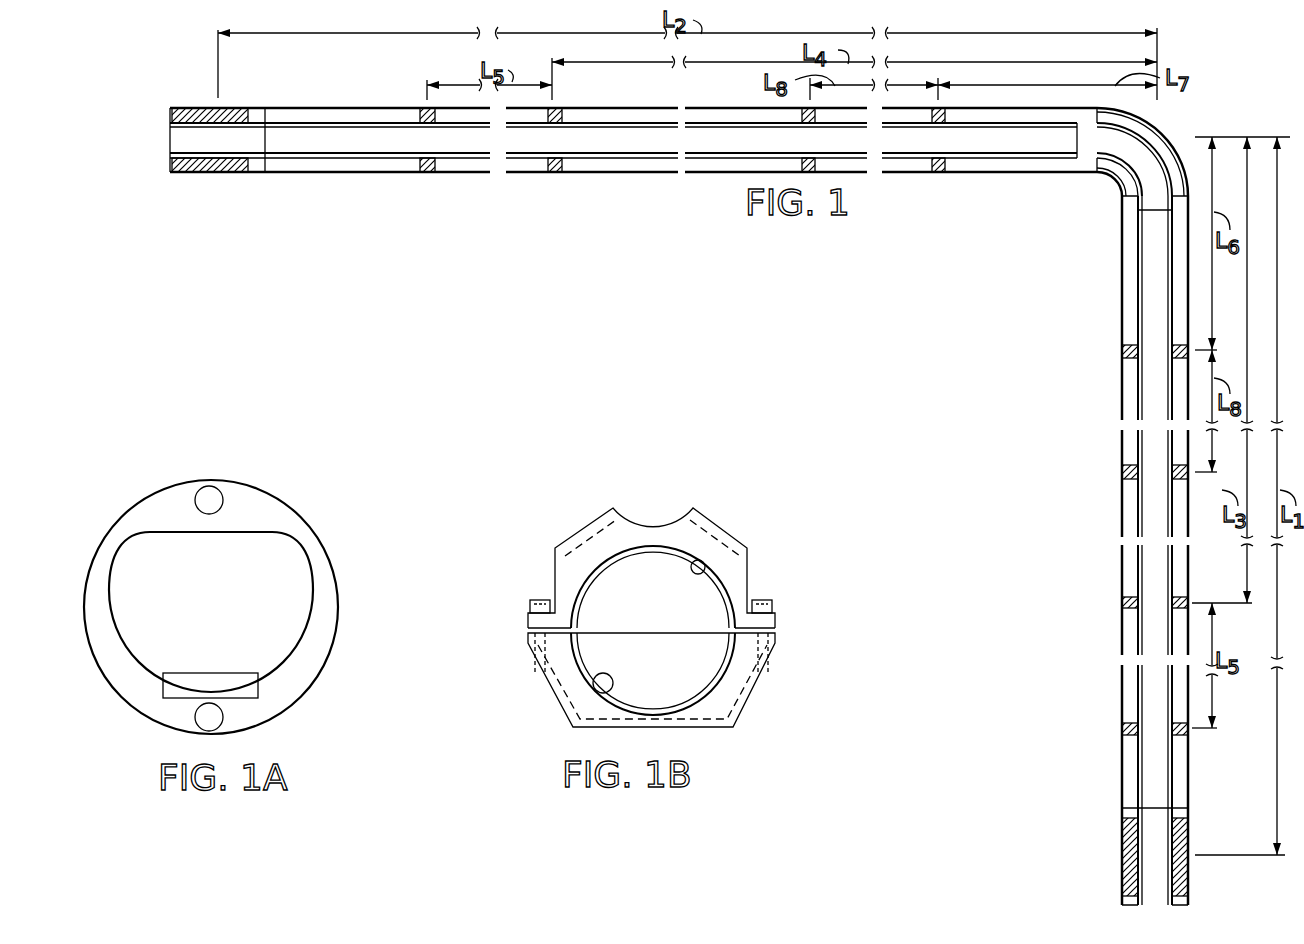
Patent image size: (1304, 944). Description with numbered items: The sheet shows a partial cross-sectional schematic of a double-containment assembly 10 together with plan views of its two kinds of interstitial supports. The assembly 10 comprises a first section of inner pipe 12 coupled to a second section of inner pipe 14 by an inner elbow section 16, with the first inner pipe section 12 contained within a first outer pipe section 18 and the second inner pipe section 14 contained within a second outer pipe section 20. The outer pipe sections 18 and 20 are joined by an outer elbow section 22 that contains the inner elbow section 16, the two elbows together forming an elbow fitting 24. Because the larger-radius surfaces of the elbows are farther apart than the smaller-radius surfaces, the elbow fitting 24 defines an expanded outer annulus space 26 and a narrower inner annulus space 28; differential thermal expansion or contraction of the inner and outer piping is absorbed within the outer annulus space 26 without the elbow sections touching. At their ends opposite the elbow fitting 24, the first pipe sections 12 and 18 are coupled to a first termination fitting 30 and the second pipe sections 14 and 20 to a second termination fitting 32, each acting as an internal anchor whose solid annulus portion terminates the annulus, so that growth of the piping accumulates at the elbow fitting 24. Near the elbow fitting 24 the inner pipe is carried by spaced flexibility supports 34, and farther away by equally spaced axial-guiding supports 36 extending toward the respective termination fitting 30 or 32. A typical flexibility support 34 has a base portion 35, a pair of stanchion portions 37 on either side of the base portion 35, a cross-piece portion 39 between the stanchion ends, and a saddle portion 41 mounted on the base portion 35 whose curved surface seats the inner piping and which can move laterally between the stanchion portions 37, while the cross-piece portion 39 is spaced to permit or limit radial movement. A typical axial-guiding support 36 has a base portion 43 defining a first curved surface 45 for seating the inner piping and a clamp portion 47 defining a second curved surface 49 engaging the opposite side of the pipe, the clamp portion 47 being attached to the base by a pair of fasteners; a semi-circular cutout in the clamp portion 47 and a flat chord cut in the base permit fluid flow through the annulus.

In FIG. 1, the double-containment assembly 10 is at (1198, 80).
In FIG. 1, the first section of inner pipe 12 is at (1135, 403).
In FIG. 1, the second section of inner pipe 14 is at (641, 122).
In FIG. 1, the inner elbow section 16 is at (1192, 138).
In FIG. 1, the first outer pipe section 18 is at (1120, 512).
In FIG. 1, the second outer pipe section 20 is at (645, 173).
In FIG. 1, the outer elbow section 22 is at (1156, 140).
In FIG. 1, the elbow fitting 24 is at (1112, 182).
In FIG. 1, the outer annulus space 26 is at (1182, 148).
In FIG. 1, the inner annulus space 28 is at (1108, 172).
In FIG. 1, the first termination fitting 30 is at (1122, 856).
In FIG. 1, the second termination fitting 32 is at (217, 102).
In FIG. 1, the flexibility support 34 is at (806, 112).
In FIG. 1A, the flexibility support 34 is at (110, 504).
In FIG. 1A, the base portion 35 is at (173, 722).
In FIG. 1, the axial-guiding support 36 is at (421, 108).
In FIG. 1B, the axial-guiding support 36 is at (547, 530).
In FIG. 1A, the stanchion portions 37 is at (93, 596).
In FIG. 1A, the cross-piece portion 39 is at (260, 510).
In FIG. 1A, the saddle portion 41 is at (230, 694).
In FIG. 1B, the base portion 43 is at (728, 703).
In FIG. 1B, the first curved surface 45 is at (603, 681).
In FIG. 1B, the clamp portion 47 is at (597, 538).
In FIG. 1B, the second curved surface 49 is at (700, 570).